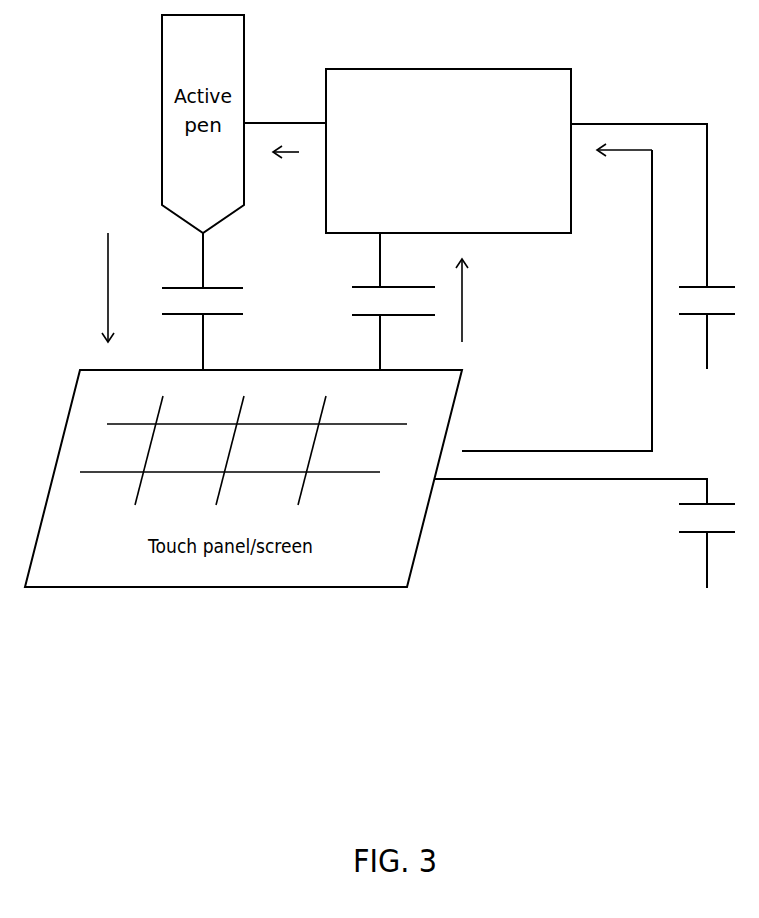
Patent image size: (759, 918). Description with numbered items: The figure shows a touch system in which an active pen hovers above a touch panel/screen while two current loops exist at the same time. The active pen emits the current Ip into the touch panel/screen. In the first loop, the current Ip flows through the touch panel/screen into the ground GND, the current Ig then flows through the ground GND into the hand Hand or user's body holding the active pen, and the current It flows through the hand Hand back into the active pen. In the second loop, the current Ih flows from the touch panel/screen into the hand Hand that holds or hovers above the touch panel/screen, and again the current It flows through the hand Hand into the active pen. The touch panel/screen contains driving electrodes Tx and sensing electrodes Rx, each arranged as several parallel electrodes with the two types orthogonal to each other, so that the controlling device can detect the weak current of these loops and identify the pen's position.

The current Ip is at (92, 287).
The current It is at (285, 156).
The hand Hand is at (448, 151).
The current Ih is at (424, 301).
The current Ig is at (557, 297).
The ground GND is at (585, 376).
The driving electrode Tx is at (238, 442).
The sensing electrode Rx is at (224, 463).